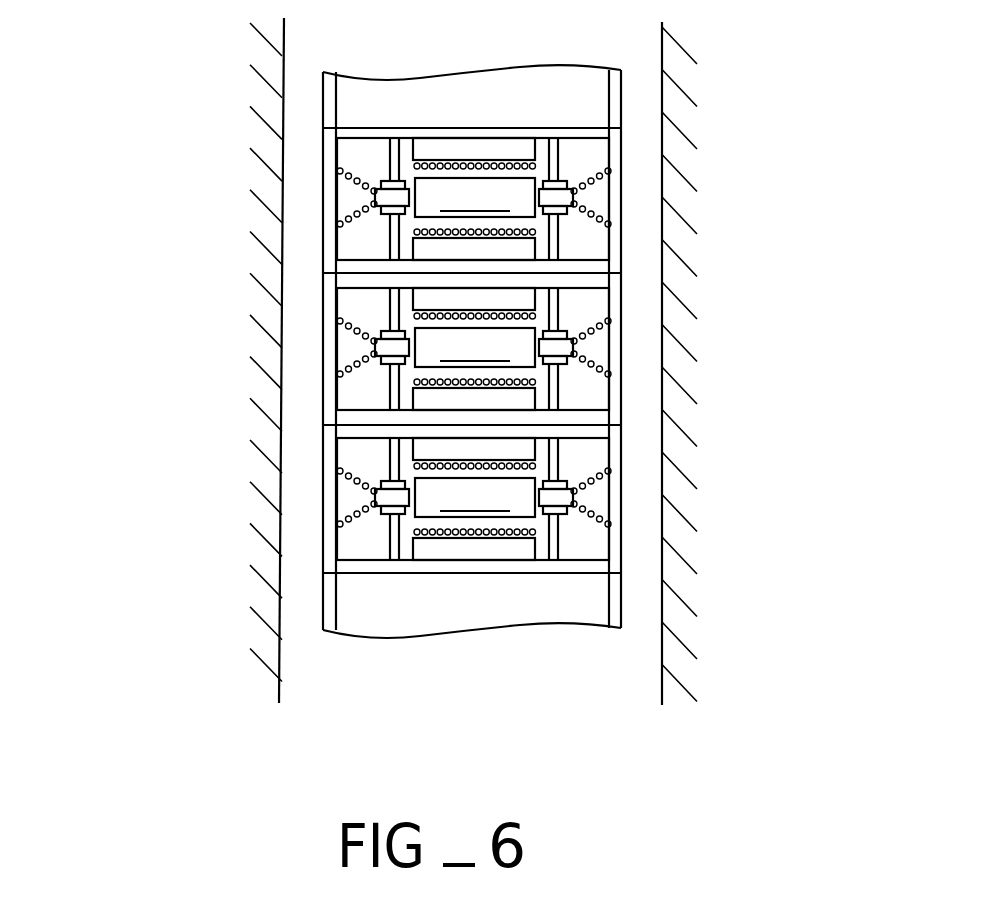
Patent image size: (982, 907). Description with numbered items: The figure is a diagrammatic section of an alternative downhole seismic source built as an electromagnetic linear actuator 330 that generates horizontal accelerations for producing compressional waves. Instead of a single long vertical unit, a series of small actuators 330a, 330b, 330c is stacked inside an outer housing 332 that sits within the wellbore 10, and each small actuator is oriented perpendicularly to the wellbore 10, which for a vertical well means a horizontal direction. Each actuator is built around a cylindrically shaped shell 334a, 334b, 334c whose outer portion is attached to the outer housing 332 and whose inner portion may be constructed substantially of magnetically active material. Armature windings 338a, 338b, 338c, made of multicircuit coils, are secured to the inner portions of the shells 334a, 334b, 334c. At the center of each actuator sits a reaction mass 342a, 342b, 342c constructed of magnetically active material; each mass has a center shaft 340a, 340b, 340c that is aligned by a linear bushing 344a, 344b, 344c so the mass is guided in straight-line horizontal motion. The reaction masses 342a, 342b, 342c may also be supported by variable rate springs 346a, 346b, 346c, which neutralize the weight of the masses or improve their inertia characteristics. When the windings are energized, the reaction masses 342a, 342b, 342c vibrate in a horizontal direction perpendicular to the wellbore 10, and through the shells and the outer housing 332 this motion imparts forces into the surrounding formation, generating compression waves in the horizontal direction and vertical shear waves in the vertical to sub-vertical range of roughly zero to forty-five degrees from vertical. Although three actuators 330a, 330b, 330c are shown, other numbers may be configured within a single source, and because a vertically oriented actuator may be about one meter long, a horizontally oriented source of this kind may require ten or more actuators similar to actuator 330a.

The wellbore 10 is at (663, 137).
The electromagnetic linear actuator 330 is at (157, 123).
The small actuator 330a is at (469, 135).
The small actuator 330b is at (472, 322).
The small actuator 330c is at (469, 517).
The outer housing 332 is at (328, 147).
The cylindrically shaped shell 334a is at (490, 152).
The cylindrically shaped shell 334b is at (527, 302).
The cylindrically shaped shell 334c is at (525, 451).
The armature winding 338a is at (455, 152).
The armature winding 338b is at (490, 303).
The armature winding 338c is at (494, 453).
The center shaft 340a is at (574, 197).
The center shaft 340b is at (566, 350).
The center shaft 340c is at (560, 498).
The reaction mass 342a is at (475, 197).
The reaction mass 342b is at (475, 347).
The reaction mass 342c is at (475, 497).
The linear bushing 344a is at (381, 181).
The linear bushing 344b is at (378, 337).
The linear bushing 344c is at (382, 514).
The variable rate spring 346a is at (357, 173).
The variable rate spring 346b is at (362, 372).
The variable rate spring 346c is at (277, 553).